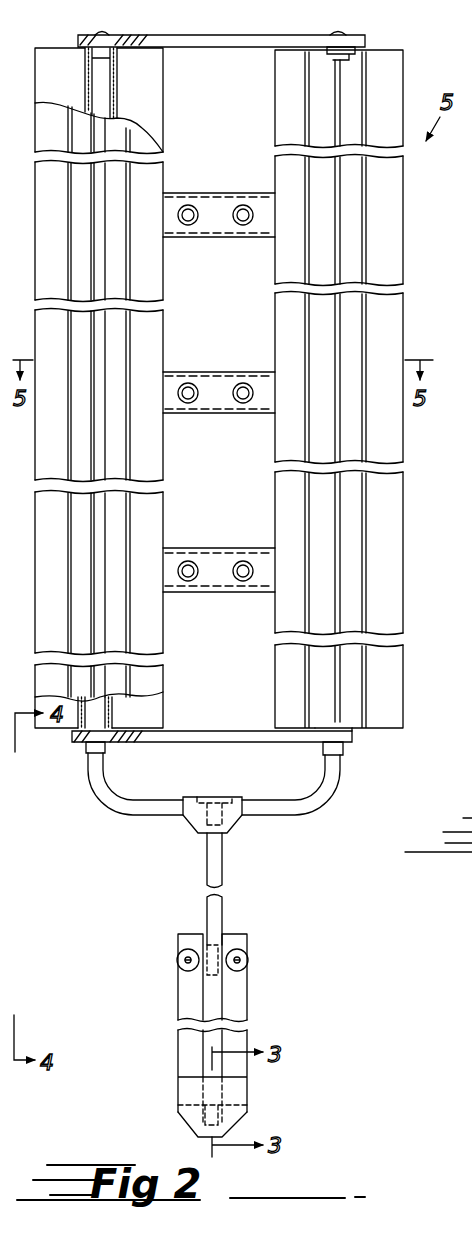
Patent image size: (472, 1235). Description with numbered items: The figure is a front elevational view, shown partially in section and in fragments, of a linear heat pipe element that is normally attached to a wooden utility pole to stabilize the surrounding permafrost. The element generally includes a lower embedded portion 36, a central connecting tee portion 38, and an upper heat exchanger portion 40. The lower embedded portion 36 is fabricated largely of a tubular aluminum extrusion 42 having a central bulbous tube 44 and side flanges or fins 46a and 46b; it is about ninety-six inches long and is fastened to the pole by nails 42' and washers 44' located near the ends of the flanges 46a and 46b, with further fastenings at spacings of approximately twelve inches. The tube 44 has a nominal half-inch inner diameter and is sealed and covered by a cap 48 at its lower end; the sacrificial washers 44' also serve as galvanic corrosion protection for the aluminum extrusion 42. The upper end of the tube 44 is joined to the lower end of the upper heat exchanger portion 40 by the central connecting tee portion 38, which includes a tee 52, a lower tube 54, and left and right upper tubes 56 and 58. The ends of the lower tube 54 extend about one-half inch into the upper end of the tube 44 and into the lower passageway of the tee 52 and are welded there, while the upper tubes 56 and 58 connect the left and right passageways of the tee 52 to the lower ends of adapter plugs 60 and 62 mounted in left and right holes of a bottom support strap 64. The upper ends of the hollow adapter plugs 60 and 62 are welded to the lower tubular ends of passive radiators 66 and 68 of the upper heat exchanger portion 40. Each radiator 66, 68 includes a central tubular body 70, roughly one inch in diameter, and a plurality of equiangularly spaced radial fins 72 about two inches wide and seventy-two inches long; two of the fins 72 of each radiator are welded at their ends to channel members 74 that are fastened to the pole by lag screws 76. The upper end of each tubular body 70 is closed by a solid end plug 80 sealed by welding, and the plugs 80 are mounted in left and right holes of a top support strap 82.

The lower embedded portion 36 is at (222, 1072).
The central connecting tee portion 38 is at (243, 999).
The upper heat exchanger portion 40 is at (245, 569).
The tubular extrusion 42 is at (180, 1071).
The nails 42' is at (157, 936).
The central bulbous tube 44 is at (180, 978).
The washers 44' is at (275, 940).
The side flange 46a is at (180, 975).
The side flange 46b is at (247, 993).
The cap 48 is at (177, 1090).
The tee 52 is at (185, 822).
The lower tube 54 is at (224, 866).
The left upper tube 56 is at (96, 783).
The right upper tube 58 is at (315, 807).
The adapter plug 60 is at (85, 749).
The adapter plug 62 is at (345, 752).
The bottom support strap 64 is at (352, 737).
The passive radiator 66 is at (162, 683).
The passive radiator 68 is at (398, 677).
The central tubular body 70 is at (118, 95).
The radial fins 72 is at (163, 167).
The channel members 74 is at (189, 372).
The lag screws 76 is at (189, 403).
The solid end plug 80 is at (106, 33).
The top support strap 82 is at (215, 36).